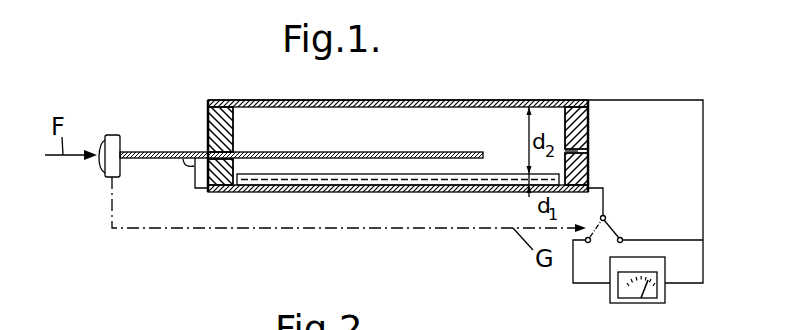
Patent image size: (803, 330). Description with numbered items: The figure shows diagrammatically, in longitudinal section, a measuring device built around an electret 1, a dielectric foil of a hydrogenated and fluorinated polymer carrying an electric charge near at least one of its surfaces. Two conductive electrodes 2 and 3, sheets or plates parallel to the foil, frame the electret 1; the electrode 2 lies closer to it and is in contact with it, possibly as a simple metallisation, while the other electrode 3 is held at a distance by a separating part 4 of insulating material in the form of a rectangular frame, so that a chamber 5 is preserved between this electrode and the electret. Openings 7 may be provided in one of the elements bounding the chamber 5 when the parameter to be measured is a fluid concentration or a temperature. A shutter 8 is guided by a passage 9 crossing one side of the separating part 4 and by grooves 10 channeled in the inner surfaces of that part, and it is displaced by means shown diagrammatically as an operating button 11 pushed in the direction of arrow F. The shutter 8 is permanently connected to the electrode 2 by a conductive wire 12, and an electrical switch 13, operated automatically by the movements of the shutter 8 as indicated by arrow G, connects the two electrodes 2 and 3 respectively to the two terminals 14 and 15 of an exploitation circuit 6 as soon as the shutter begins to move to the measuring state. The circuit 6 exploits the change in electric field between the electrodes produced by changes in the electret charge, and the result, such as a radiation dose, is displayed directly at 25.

The electret 1 is at (302, 185).
The conductive electrode 2 is at (358, 185).
The conductive electrode 3 is at (455, 100).
The separating part 4 is at (586, 125).
The chamber 5 is at (505, 132).
The exploitation circuit 6 is at (660, 267).
The openings 7 is at (313, 100).
The shutter 8 is at (377, 152).
The passage 9 is at (243, 128).
The grooves 10 is at (573, 153).
The operating button 11 is at (108, 150).
The conductive wire 12 is at (192, 172).
The electrical switch 13 is at (607, 222).
The terminal 14 is at (610, 285).
The terminal 15 is at (665, 285).
The display 25 is at (643, 298).